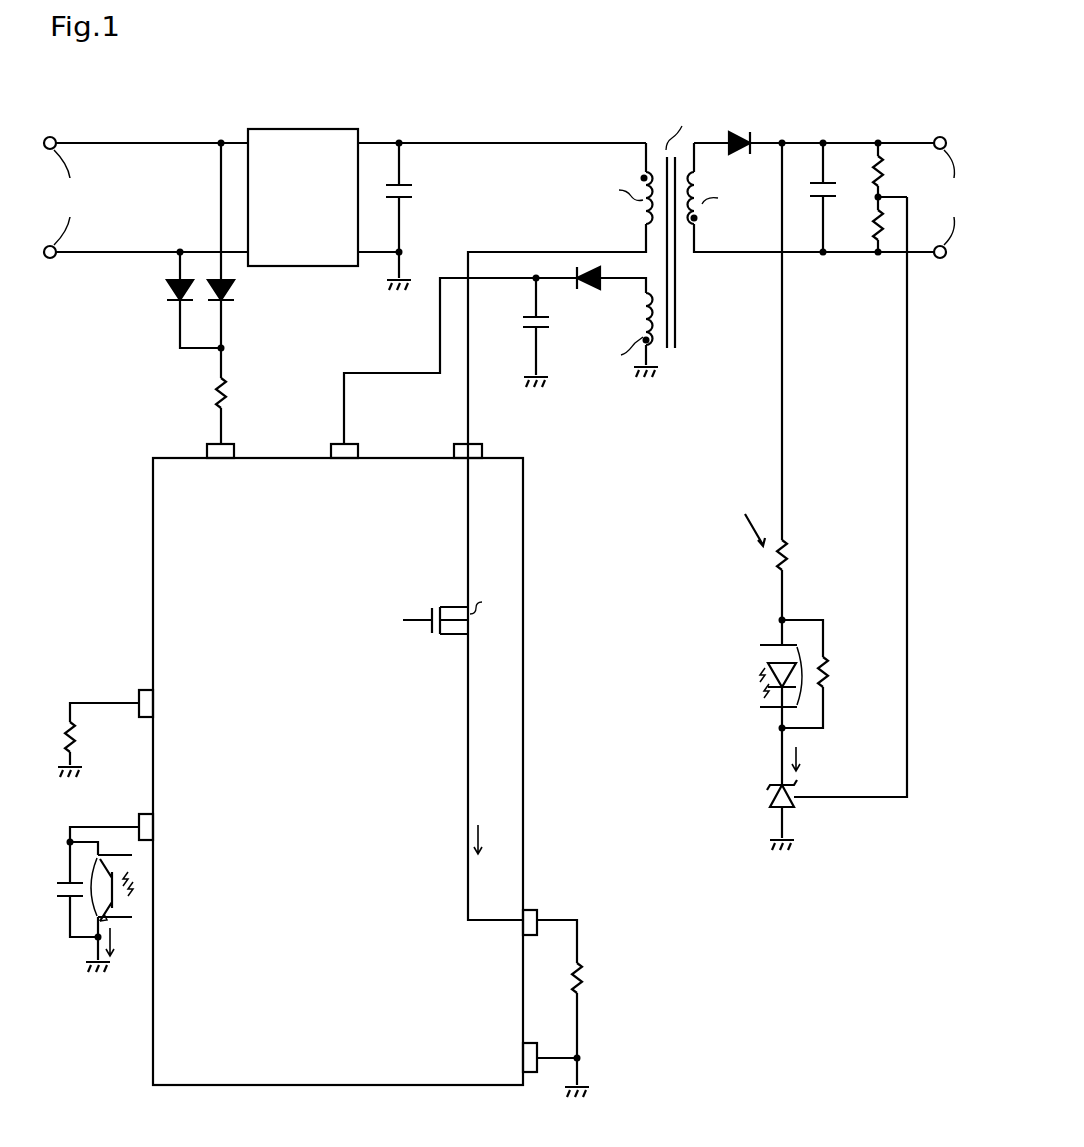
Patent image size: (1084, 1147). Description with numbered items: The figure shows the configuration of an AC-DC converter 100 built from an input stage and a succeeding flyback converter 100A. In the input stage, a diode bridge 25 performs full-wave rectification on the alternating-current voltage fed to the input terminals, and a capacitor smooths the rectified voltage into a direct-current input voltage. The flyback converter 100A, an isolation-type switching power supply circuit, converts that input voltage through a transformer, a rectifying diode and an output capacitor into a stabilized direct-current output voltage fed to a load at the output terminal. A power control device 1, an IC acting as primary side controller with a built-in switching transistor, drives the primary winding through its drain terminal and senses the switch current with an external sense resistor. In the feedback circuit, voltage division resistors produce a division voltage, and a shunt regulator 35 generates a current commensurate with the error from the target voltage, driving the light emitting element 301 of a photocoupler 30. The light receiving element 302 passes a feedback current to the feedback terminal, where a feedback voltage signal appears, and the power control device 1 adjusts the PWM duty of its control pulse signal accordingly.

The AC-DC converter 100 is at (704, 42).
The flyback converter 100A is at (771, 98).
The diode bridge 25 is at (345, 129).
The power control device 1 is at (523, 487).
The photocoupler 30 is at (768, 645).
The light emitting element 301 is at (768, 663).
The light receiving element 302 is at (112, 872).
The shunt regulator 35 is at (769, 803).